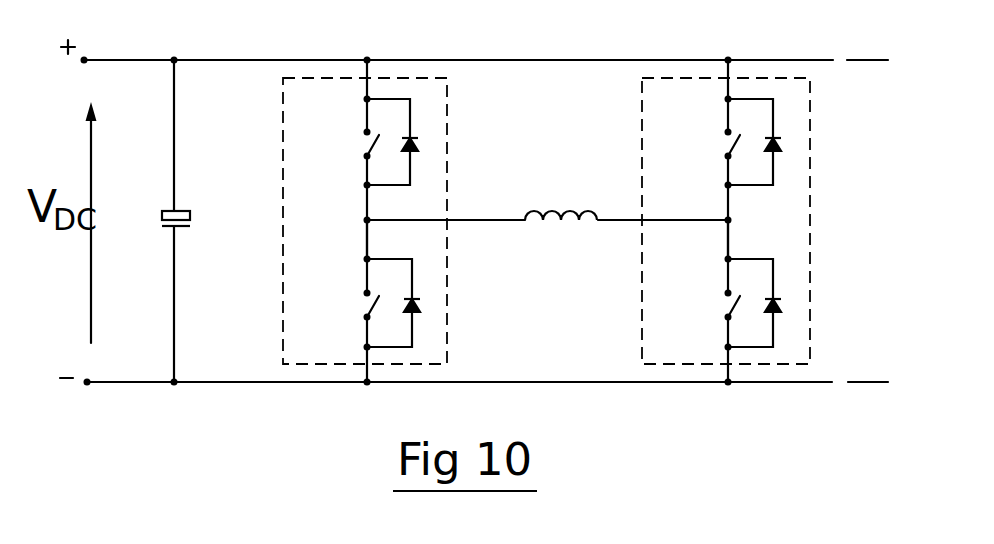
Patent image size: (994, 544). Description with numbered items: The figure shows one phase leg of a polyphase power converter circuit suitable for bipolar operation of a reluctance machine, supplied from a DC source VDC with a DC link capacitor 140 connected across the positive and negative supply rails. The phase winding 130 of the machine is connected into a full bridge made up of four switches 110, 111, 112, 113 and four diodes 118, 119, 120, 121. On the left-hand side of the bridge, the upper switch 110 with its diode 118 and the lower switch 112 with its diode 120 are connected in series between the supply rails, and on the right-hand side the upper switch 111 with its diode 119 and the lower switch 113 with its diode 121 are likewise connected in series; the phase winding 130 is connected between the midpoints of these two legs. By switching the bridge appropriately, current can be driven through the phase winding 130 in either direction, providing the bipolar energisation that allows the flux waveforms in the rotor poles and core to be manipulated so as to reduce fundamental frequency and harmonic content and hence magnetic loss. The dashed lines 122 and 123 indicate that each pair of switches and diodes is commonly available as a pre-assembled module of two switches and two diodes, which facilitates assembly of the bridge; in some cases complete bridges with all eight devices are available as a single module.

The switch 110 is at (362, 147).
The switch 111 is at (723, 147).
The switch 112 is at (362, 302).
The switch 113 is at (723, 302).
The diode 118 is at (418, 146).
The diode 119 is at (781, 146).
The diode 120 is at (418, 312).
The diode 121 is at (781, 312).
The pre-assembled module 122 is at (448, 100).
The pre-assembled module 123 is at (811, 98).
The phase winding 130 is at (572, 223).
The DC link capacitor 140 is at (180, 209).